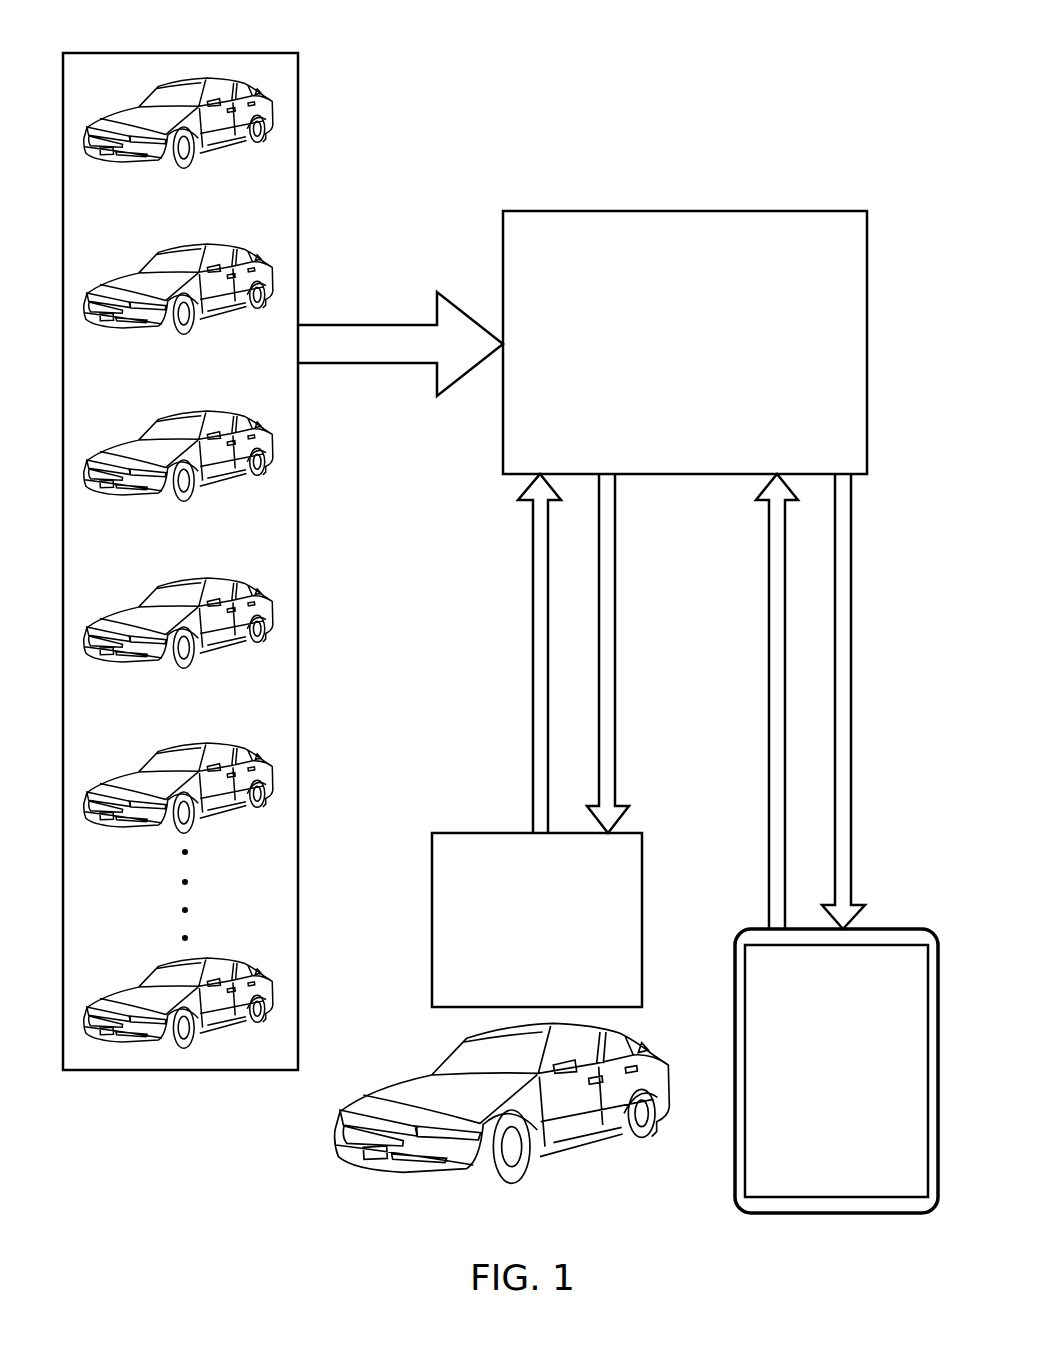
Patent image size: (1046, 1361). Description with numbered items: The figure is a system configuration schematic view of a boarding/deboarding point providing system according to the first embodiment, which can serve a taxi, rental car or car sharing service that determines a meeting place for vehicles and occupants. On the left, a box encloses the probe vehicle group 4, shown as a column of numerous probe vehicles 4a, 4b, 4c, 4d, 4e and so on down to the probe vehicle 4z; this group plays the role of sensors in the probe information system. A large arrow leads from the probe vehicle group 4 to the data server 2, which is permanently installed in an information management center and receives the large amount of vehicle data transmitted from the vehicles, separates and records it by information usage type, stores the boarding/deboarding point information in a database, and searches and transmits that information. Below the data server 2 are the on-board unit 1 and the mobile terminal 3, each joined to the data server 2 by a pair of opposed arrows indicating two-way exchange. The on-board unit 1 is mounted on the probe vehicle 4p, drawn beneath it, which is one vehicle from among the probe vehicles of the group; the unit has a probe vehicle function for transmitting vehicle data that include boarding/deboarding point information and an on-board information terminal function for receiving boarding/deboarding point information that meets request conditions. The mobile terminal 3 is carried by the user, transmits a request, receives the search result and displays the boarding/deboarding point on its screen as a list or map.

The on-board unit 1 is at (455, 833).
The data server 2 is at (783, 211).
The mobile terminal 3 is at (907, 929).
The probe vehicle group 4 is at (300, 88).
The probe vehicle 4a is at (213, 147).
The probe vehicle 4b is at (257, 252).
The probe vehicle 4c is at (215, 482).
The probe vehicle 4d is at (220, 644).
The probe vehicle 4e is at (218, 819).
The probe vehicle 4z is at (215, 1025).
The probe vehicle 4p is at (598, 1140).